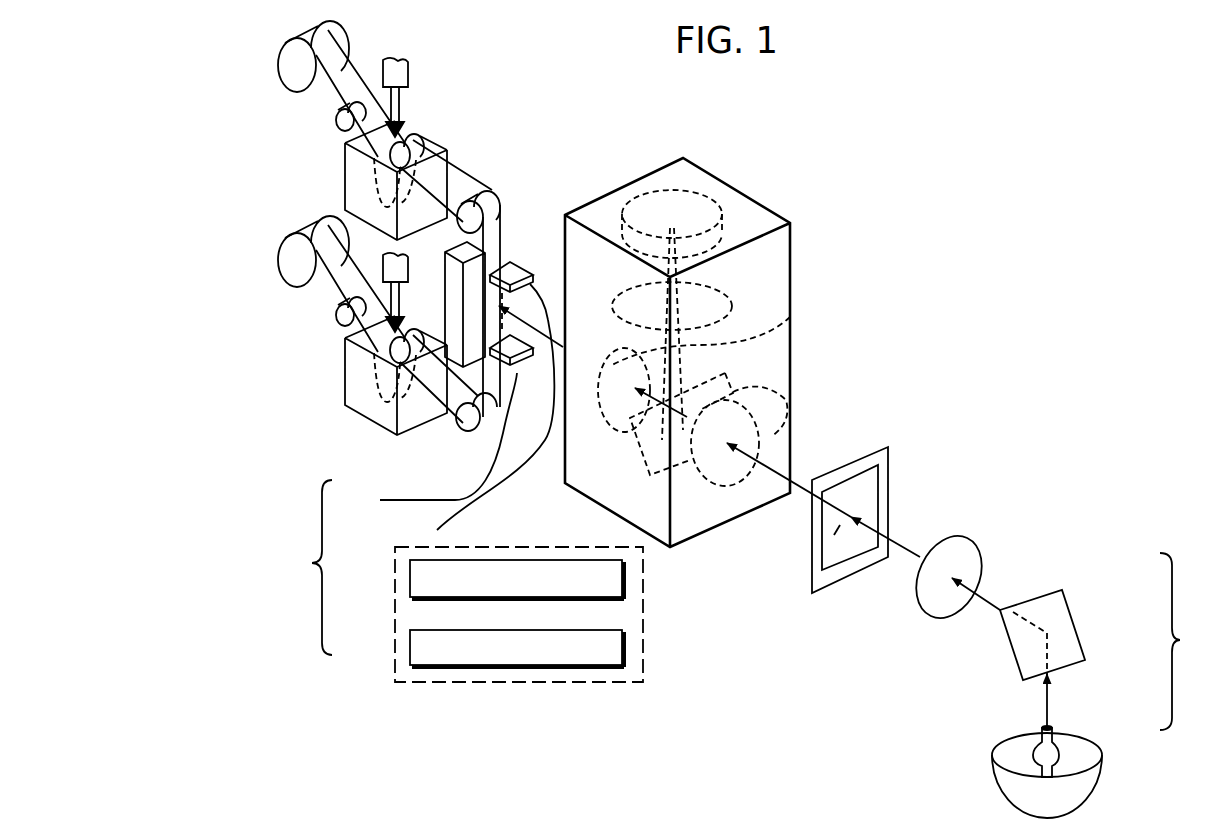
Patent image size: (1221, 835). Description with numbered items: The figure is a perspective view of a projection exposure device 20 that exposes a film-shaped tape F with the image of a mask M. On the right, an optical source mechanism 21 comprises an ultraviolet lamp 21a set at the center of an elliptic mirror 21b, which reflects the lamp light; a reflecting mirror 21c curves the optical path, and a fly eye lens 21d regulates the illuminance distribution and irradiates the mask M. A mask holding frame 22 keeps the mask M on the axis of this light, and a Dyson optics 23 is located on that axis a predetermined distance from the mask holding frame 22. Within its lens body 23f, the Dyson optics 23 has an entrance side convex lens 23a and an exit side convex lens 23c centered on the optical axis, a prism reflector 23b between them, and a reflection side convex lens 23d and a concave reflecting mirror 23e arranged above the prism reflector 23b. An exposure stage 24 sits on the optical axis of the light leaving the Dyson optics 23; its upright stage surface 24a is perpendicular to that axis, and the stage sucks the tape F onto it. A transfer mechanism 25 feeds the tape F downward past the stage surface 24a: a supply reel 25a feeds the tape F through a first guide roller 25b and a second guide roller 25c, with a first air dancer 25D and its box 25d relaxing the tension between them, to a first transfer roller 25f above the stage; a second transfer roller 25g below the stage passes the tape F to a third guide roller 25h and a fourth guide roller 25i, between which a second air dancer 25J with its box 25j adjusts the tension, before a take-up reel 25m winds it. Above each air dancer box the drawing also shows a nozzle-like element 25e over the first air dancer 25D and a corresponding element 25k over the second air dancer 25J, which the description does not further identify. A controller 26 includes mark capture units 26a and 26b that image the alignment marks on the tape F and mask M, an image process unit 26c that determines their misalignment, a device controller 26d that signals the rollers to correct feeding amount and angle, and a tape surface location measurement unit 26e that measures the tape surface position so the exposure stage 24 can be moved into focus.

The projection exposure device 20 is at (909, 117).
The optical source mechanism 21 is at (1058, 671).
The ultraviolet lamp 21a is at (1055, 753).
The elliptic mirror 21b is at (1085, 785).
The reflecting mirror 21c is at (1063, 640).
The fly eye lens 21d is at (968, 556).
The mask holding frame 22 is at (884, 492).
The mask M is at (834, 535).
The Dyson optics 23 is at (796, 358).
The entrance side convex lens 23a is at (760, 430).
The prism reflector 23b is at (765, 397).
The exit side convex lens 23c is at (790, 317).
The reflection side convex lens 23d is at (737, 305).
The concave reflecting mirror 23e is at (707, 190).
The lens body 23f is at (790, 257).
The exposure stage 24 is at (476, 238).
The stage surface 24a is at (507, 267).
The transfer mechanism 25 is at (458, 100).
The first air dancer 25D is at (333, 210).
The supply reel 25a is at (296, 67).
The first guide roller 25b is at (338, 124).
The second guide roller 25c is at (395, 156).
The box of first air dancer 25d is at (355, 207).
The developer nozzle 25e is at (406, 78).
The first transfer roller 25f is at (471, 201).
The second transfer roller 25g is at (463, 428).
The second air dancer 25J is at (340, 414).
The take-up reel 25m is at (297, 261).
The fixer nozzle 25k is at (386, 272).
The fourth guide roller 25i is at (338, 319).
The third guide roller 25h is at (395, 350).
The box of second air dancer 25j is at (360, 388).
The tape F is at (448, 161).
The controller 26 is at (460, 483).
The mark capture unit 26a is at (444, 415).
The mark capture unit 26b is at (426, 444).
The image process unit 26c is at (410, 580).
The device controller 26d is at (410, 650).
The tape surface location measurement unit 26e is at (444, 415).